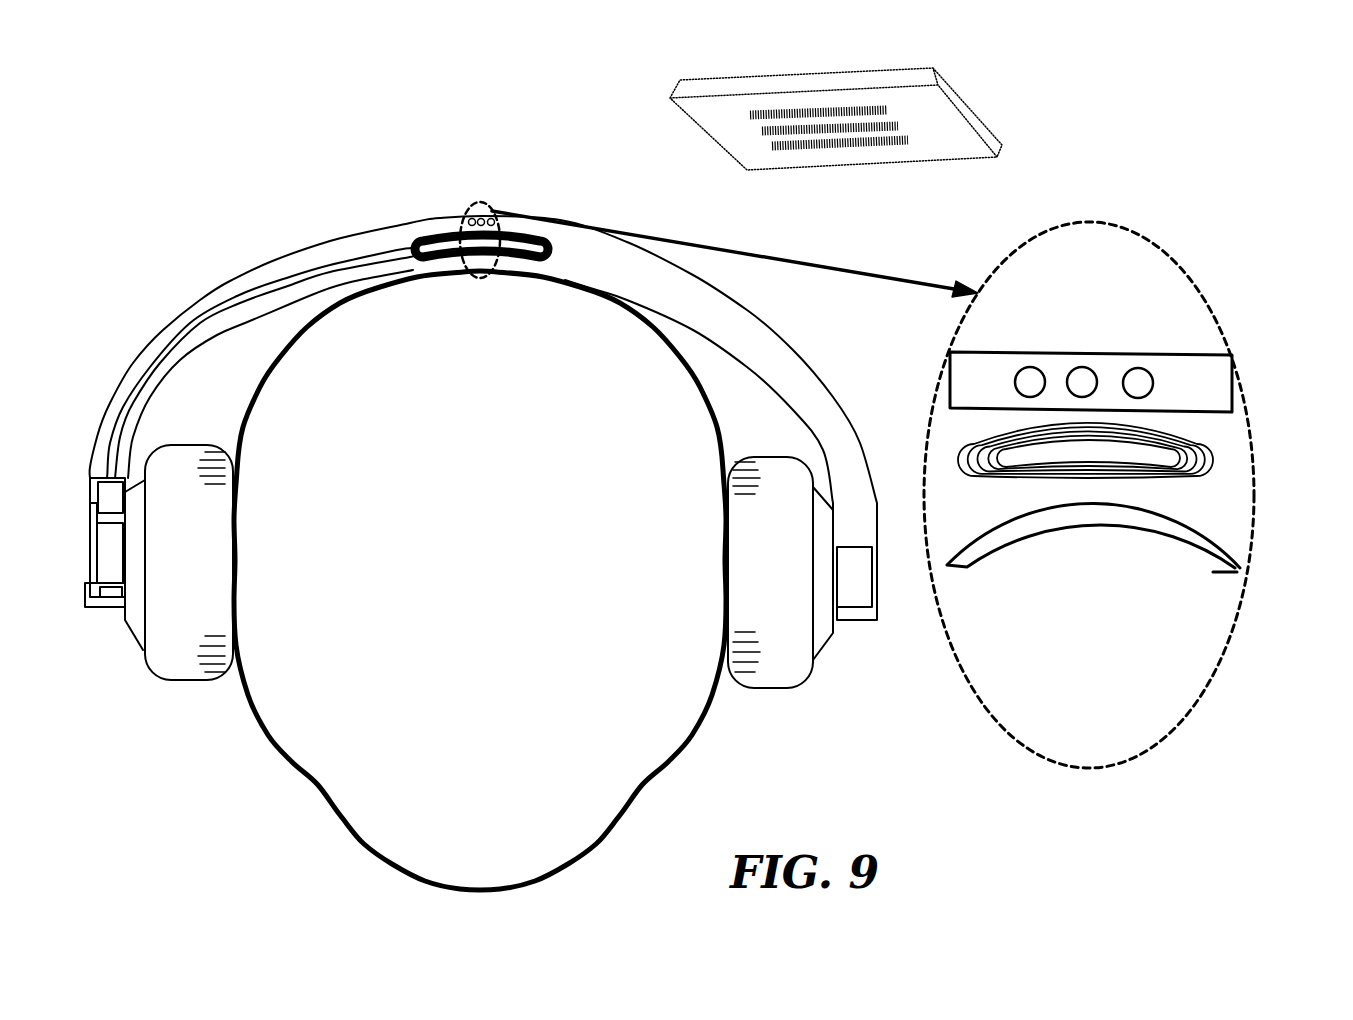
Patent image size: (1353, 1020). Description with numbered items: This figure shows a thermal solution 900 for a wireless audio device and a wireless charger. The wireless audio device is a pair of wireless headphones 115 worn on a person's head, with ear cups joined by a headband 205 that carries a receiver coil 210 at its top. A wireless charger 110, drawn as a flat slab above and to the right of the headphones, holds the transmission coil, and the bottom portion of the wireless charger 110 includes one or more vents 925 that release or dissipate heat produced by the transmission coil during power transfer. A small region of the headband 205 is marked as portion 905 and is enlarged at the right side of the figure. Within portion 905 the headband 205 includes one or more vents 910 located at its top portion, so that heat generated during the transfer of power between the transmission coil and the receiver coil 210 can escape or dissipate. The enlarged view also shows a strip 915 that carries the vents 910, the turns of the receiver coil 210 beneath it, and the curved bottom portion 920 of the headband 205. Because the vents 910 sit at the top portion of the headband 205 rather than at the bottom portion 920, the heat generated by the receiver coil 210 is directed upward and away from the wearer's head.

The thermal solution 900 is at (262, 178).
The wireless charger 110 is at (954, 98).
The wireless headphones 115 is at (800, 688).
The headband 205 is at (634, 243).
The receiver coil 210 is at (441, 236).
The portion 905 is at (481, 204).
The vents 910 is at (1127, 371).
The contact strip / board 915 is at (1233, 397).
The bottom portion 920 is at (1237, 575).
The vents 925 is at (841, 150).